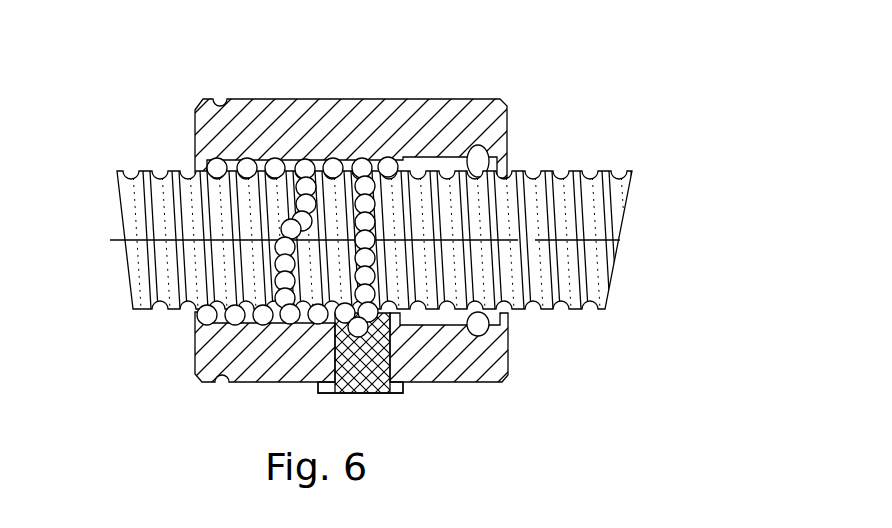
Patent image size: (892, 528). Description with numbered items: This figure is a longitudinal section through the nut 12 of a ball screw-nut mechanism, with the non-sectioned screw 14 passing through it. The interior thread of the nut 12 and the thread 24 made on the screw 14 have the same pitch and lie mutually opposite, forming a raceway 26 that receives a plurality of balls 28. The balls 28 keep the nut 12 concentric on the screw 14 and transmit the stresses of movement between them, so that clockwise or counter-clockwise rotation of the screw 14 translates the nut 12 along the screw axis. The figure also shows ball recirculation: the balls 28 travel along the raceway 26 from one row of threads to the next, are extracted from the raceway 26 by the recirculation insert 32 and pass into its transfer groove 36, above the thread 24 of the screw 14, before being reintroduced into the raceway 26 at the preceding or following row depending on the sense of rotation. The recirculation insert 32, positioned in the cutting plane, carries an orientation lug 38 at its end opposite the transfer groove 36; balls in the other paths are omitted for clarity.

The nut 12 is at (443, 86).
The screw 14 is at (382, 238).
The thread 24 is at (540, 297).
The raceway 26 is at (275, 162).
The balls 28 is at (237, 313).
The recirculation insert 32 is at (348, 357).
The transfer groove 36 is at (392, 331).
The orientation lug 38 is at (405, 387).